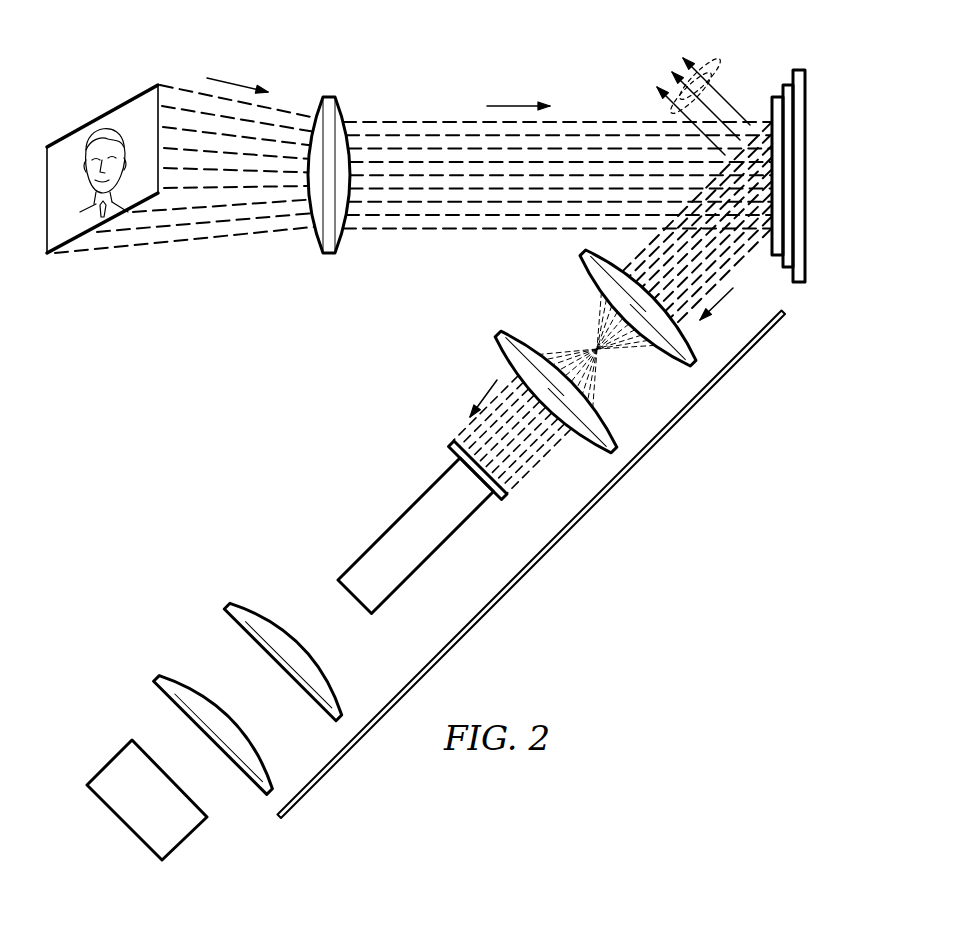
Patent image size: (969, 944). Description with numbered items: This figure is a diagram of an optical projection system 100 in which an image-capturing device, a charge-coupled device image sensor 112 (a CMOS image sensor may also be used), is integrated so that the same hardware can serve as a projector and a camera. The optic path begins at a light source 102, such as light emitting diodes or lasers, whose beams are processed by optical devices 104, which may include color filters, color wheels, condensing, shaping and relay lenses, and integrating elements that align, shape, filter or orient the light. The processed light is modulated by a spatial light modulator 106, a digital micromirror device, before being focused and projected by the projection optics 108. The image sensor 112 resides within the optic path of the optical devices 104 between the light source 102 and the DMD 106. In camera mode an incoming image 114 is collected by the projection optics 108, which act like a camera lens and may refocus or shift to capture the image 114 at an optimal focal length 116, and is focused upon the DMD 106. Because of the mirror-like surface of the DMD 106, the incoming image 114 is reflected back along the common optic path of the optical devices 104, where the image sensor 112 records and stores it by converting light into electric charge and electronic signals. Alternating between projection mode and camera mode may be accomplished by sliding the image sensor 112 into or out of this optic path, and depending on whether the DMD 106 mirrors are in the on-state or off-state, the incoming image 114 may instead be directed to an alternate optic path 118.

The optical projection system 100 is at (578, 62).
The light source 102 is at (107, 758).
The optical devices 104 is at (531, 565).
The spatial light modulator 106 is at (800, 71).
The projection optics 108 is at (329, 96).
The image sensor 112 is at (452, 442).
The incoming image 114 is at (104, 113).
The optimal focal length 116 is at (158, 251).
The alternate optic path 118 is at (712, 73).